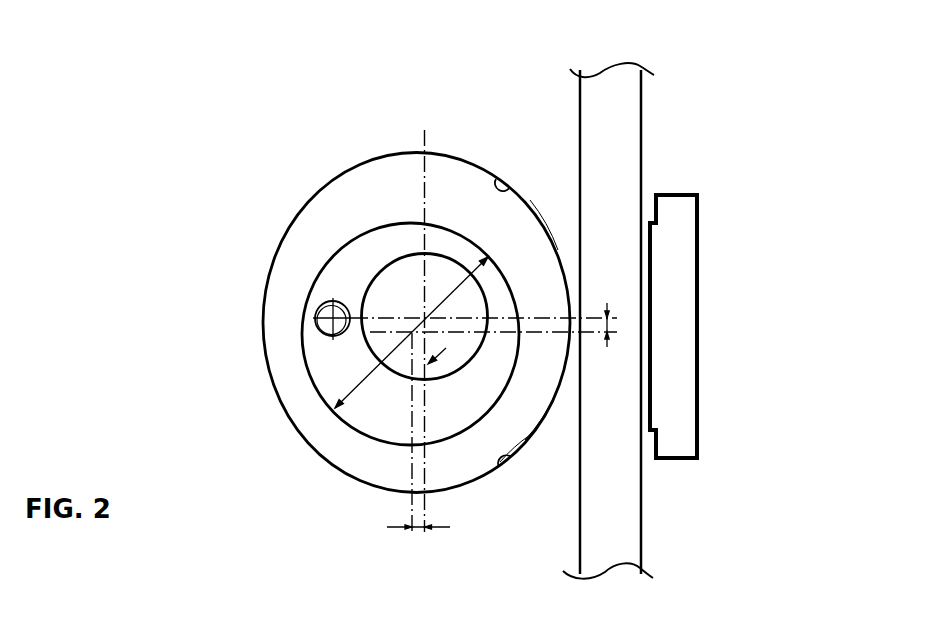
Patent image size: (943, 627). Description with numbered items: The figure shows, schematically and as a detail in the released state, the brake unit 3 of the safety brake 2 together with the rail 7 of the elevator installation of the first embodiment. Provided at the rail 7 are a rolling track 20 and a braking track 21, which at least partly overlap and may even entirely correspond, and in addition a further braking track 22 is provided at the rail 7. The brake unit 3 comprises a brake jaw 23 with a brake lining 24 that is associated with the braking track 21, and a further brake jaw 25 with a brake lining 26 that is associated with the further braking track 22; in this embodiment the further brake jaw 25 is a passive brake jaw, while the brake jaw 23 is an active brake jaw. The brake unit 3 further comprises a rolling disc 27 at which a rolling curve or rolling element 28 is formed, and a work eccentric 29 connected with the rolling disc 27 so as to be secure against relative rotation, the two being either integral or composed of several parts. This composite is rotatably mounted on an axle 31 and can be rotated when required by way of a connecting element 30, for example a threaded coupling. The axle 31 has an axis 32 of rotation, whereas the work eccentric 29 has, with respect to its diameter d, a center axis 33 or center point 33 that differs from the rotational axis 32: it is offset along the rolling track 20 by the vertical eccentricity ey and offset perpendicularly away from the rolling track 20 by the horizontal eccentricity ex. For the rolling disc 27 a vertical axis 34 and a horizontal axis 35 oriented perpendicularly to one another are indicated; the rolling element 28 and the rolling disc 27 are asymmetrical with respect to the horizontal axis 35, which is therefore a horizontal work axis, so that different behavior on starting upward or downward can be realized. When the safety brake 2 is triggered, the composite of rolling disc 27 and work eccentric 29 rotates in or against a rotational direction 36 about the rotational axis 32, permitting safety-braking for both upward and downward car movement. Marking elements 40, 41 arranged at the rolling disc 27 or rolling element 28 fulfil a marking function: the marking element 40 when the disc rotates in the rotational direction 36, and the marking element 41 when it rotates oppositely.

The safety brake 2 is at (373, 312).
The brake unit 3 is at (233, 88).
The rail 7 is at (666, 317).
The rolling track 20 is at (666, 577).
The braking track 21 is at (572, 557).
The further braking track 22 is at (645, 485).
The brake jaw 23 is at (518, 467).
The brake lining 24 is at (540, 413).
The further brake jaw 25 is at (673, 307).
The brake lining 26 is at (640, 252).
The rolling disc 27 is at (394, 185).
The rolling element 28 is at (546, 224).
The work eccentric 29 is at (337, 380).
The connecting element 30 is at (315, 318).
The axle 31 is at (387, 283).
The axis of rotation 32 is at (420, 313).
The center axis 33 is at (411, 336).
The vertical axis 34 is at (425, 142).
The horizontal axis 35 is at (385, 327).
The rotational direction 36 is at (448, 318).
The marking element 40 is at (497, 174).
The marking element 41 is at (502, 468).